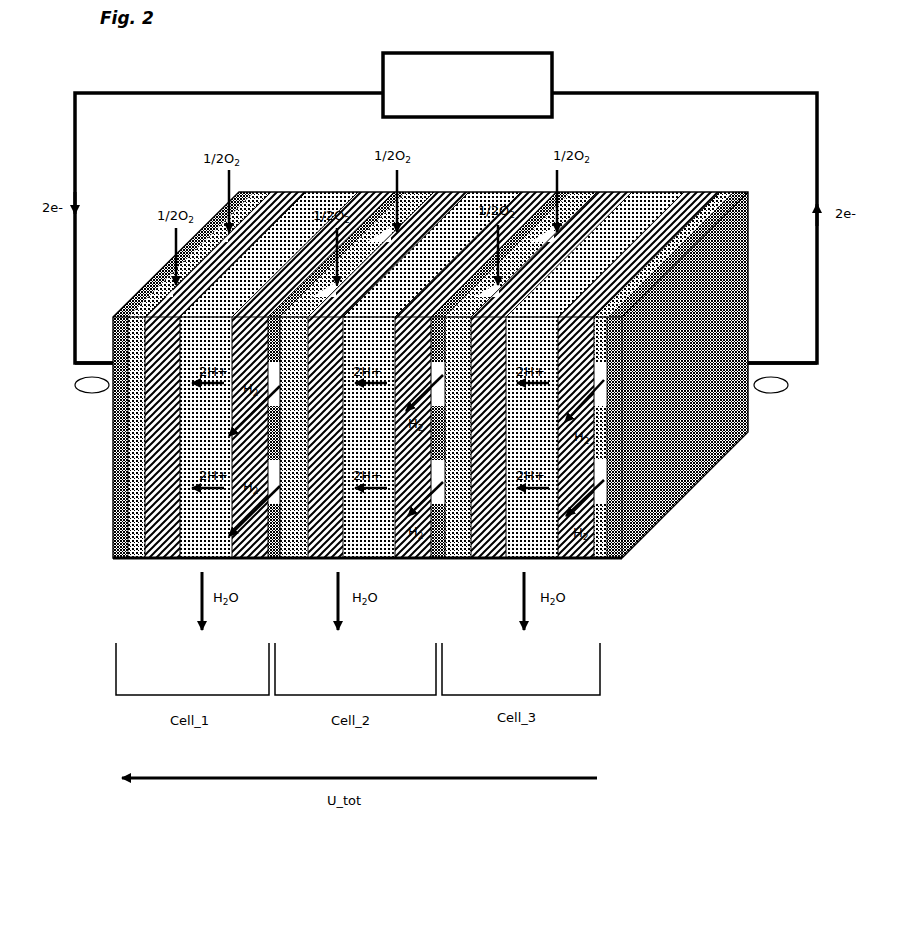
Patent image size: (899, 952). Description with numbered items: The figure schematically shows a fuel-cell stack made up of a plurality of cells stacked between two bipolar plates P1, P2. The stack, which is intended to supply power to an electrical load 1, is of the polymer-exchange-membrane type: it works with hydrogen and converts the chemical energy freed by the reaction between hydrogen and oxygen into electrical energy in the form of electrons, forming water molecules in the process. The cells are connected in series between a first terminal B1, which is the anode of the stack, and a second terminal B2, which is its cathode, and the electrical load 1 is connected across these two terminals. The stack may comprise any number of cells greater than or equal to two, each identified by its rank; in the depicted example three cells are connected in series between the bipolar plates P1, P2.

The electrical load 1 is at (467, 85).
The bipolar plate P1 is at (678, 468).
The bipolar plate P2 is at (113, 517).
The first terminal B1 is at (782, 382).
The second terminal B2 is at (74, 382).